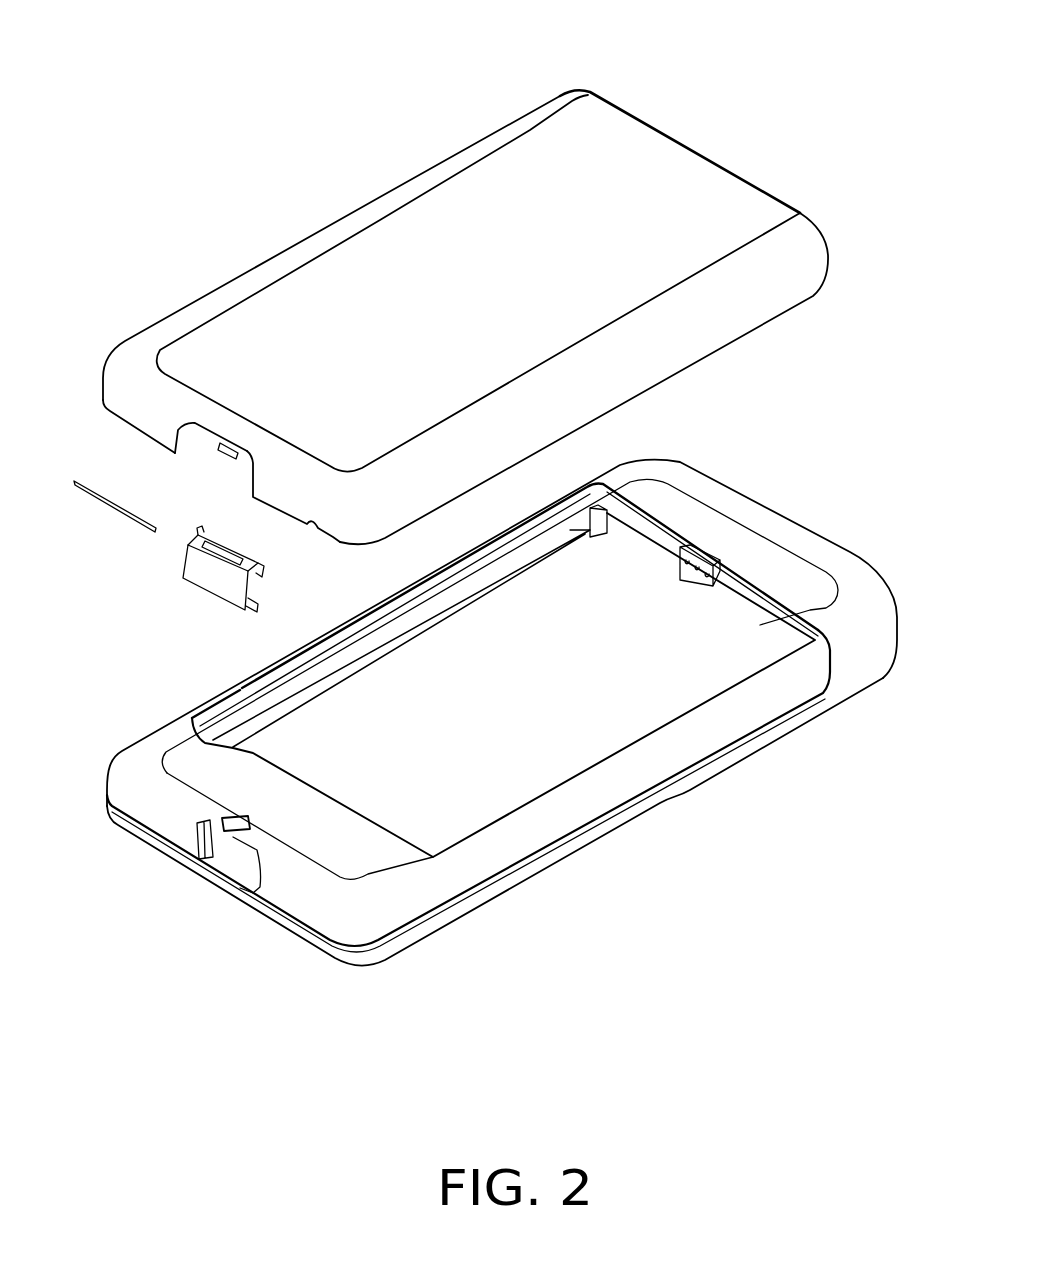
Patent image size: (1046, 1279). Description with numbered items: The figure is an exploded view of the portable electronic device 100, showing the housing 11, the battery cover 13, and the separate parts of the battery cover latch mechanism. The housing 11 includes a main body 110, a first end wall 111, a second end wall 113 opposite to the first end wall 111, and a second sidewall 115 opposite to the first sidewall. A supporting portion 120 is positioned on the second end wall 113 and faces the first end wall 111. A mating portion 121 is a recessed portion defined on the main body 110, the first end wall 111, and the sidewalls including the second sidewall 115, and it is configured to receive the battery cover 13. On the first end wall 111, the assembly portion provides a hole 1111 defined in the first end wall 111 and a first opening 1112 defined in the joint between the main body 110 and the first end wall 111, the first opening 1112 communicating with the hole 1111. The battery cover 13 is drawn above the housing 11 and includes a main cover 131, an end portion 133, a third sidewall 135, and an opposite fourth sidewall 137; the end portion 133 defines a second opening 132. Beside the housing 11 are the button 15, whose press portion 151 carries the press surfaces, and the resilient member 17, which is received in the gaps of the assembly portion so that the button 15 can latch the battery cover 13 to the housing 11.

The portable electronic device 100 is at (345, 53).
The battery cover 13 is at (391, 166).
The main cover 131 is at (660, 178).
The third sidewall 135 is at (290, 262).
The fourth sidewall 137 is at (742, 288).
The end portion 133 is at (142, 408).
The second opening 132 is at (205, 444).
The resilient member 17 is at (93, 499).
The button 15 is at (185, 592).
The press portion 151 is at (227, 595).
The housing 11 is at (818, 463).
The main body 110 is at (757, 543).
The second end wall 113 is at (853, 545).
The second sidewall 115 is at (582, 840).
The mating portion 121 is at (823, 688).
The supporting portion 120 is at (697, 556).
The first end wall 111 is at (330, 902).
The hole 1111 is at (245, 868).
The first opening 1112 is at (205, 835).